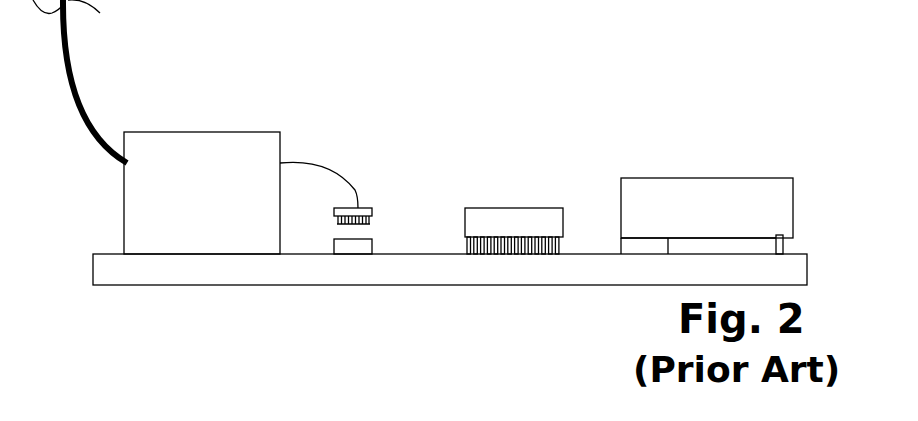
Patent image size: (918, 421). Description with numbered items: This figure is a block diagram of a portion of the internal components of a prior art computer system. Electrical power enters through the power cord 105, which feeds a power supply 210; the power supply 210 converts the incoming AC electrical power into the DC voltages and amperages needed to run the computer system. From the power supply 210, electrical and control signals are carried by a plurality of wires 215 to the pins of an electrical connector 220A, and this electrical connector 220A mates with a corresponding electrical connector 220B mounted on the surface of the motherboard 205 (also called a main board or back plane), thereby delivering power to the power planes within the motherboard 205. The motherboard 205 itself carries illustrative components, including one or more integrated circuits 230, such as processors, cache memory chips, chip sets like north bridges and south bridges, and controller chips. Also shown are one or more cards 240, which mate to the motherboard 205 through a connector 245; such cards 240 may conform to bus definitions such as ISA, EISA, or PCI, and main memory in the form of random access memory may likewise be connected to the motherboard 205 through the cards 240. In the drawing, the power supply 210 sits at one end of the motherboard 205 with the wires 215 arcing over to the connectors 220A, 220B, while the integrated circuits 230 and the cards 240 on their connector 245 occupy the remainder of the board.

The power cord 105 is at (72, 58).
The motherboard 205 is at (123, 285).
The power supply 210 is at (187, 132).
The wires 215 is at (325, 160).
The electrical connector 220A is at (372, 210).
The electrical connector 220B is at (372, 239).
The integrated circuits 230 is at (513, 208).
The cards 240 is at (677, 178).
The connector 245 is at (620, 250).